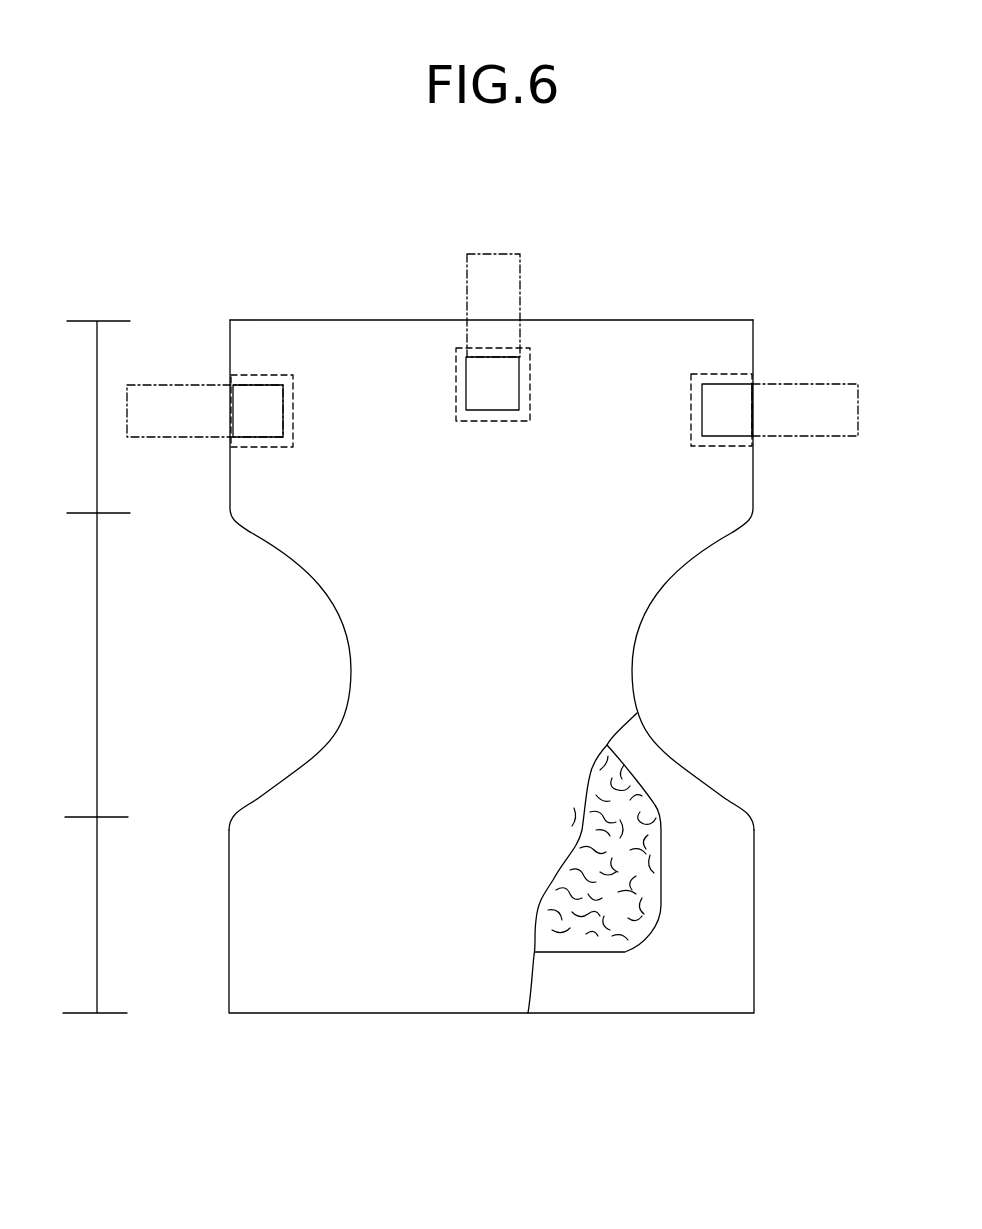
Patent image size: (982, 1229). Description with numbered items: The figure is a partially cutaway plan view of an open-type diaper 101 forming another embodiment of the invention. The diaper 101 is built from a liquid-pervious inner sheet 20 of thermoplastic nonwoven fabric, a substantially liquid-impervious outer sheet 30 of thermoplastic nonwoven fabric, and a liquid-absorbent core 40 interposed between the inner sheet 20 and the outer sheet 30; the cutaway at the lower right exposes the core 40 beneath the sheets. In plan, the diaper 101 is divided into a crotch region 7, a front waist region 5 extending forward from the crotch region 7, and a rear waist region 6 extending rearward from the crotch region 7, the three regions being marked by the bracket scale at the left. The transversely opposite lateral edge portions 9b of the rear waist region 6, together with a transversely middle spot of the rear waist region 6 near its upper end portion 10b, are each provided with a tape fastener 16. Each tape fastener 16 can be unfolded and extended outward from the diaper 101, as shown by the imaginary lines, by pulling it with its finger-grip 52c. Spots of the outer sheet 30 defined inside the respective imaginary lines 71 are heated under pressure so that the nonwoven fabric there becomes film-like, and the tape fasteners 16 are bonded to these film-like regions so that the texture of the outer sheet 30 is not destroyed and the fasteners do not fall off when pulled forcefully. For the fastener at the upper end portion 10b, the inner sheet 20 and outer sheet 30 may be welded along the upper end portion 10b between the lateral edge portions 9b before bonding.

The open-type diaper 101 is at (492, 600).
The upper end portion 10b is at (705, 335).
The lateral edge portions 9b is at (240, 493).
The outer sheet 30 is at (612, 653).
The inner sheet 20 is at (650, 760).
The liquid-absorbent core 40 is at (652, 872).
The tape fasteners 16 is at (268, 440).
The imaginary lines 71 is at (295, 425).
The finger-grips 52c is at (158, 390).
The front waist region 5 is at (97, 922).
The rear waist region 6 is at (97, 418).
The crotch region 7 is at (97, 680).